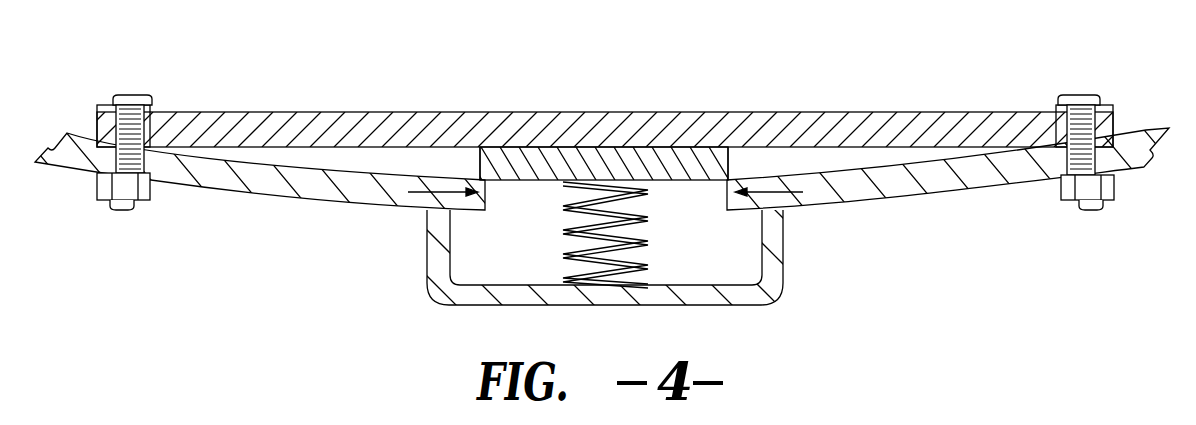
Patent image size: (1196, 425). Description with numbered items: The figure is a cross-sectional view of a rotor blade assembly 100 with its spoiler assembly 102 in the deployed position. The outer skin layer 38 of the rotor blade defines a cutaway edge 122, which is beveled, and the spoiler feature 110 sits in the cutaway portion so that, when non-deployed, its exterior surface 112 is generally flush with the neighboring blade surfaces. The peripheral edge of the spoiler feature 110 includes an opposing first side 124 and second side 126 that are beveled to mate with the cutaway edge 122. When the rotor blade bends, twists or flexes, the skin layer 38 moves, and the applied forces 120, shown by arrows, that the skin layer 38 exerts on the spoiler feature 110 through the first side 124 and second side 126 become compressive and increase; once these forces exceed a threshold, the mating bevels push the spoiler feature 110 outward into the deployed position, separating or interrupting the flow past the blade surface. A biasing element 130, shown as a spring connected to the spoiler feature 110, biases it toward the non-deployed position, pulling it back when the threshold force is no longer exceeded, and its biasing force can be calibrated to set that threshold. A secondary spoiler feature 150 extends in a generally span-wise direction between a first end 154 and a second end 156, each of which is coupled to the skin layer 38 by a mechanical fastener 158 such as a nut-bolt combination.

The rotor blade assembly 100 is at (332, 74).
The spoiler assembly 102 is at (590, 109).
The spoiler feature 110 is at (658, 165).
The exterior surface 112 is at (543, 143).
The applied forces 120 is at (420, 195).
The cutaway edge 122 is at (486, 199).
The first side 124 is at (477, 154).
The second side 126 is at (731, 163).
The biasing element 130 is at (658, 249).
The secondary spoiler feature 150 is at (909, 133).
The first end 154 is at (97, 118).
The second end 156 is at (1113, 108).
The mechanical fastener 158 is at (139, 96).
The skin layer 38 is at (232, 183).